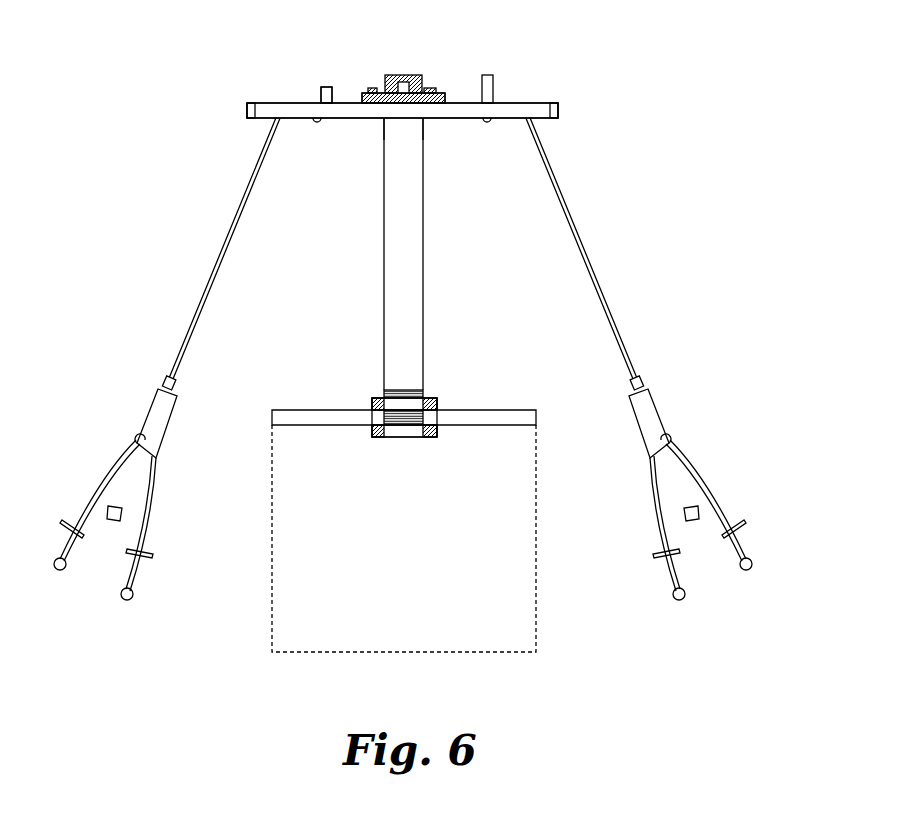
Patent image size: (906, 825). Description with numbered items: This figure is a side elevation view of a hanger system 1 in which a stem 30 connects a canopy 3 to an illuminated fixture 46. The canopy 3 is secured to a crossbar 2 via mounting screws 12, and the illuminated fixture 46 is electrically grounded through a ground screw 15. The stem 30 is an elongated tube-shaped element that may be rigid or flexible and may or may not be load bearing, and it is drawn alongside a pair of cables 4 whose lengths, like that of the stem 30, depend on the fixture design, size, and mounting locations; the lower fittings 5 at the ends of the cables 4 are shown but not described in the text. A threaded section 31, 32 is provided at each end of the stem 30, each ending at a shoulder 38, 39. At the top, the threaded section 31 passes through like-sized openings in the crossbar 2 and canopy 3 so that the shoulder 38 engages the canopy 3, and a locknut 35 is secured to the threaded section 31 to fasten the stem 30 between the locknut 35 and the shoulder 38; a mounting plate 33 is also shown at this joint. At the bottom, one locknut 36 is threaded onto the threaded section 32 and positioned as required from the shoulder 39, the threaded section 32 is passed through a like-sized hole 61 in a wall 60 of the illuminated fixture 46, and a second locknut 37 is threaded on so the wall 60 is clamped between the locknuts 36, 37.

The hanger system 1 is at (220, 80).
The crossbar 2 is at (530, 99).
The canopy 3 is at (562, 110).
The cables 4 is at (222, 250).
The turnbuckle assembly 5 is at (108, 412).
The mounting screws 12 is at (323, 87).
The ground screw 15 is at (320, 100).
The stem 30 is at (425, 253).
The threaded section 31 is at (405, 74).
The threaded section 32 is at (405, 440).
The mounting plate 33 is at (445, 97).
The locknut 35 is at (374, 95).
The locknut 36 is at (443, 403).
The locknut 37 is at (440, 433).
The shoulder 38 is at (383, 122).
The shoulder 39 is at (385, 393).
The illuminated fixture 46 is at (480, 603).
The wall 60 is at (305, 415).
The hole 61 is at (420, 440).